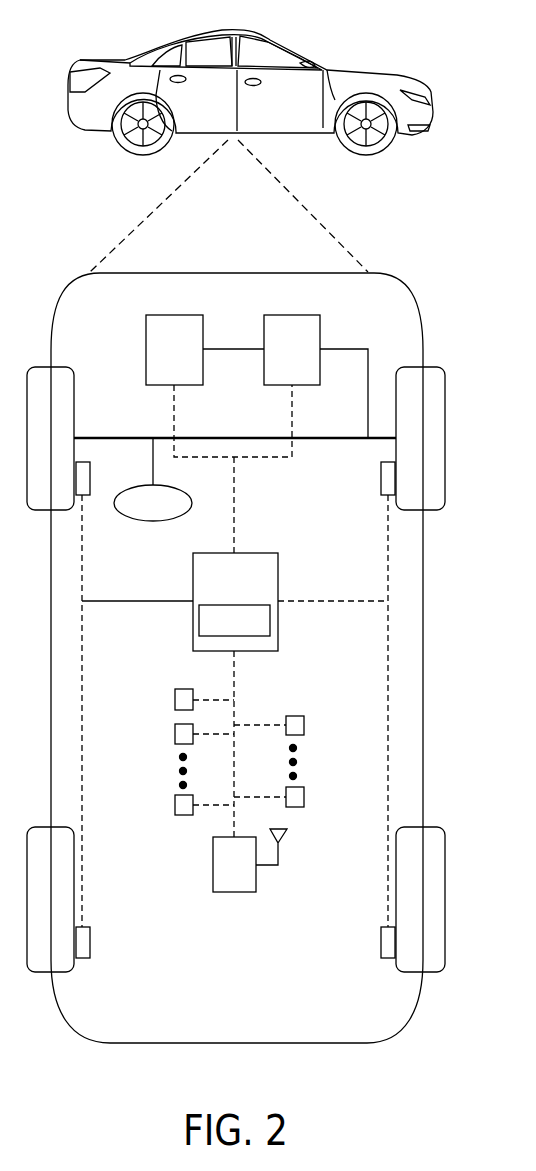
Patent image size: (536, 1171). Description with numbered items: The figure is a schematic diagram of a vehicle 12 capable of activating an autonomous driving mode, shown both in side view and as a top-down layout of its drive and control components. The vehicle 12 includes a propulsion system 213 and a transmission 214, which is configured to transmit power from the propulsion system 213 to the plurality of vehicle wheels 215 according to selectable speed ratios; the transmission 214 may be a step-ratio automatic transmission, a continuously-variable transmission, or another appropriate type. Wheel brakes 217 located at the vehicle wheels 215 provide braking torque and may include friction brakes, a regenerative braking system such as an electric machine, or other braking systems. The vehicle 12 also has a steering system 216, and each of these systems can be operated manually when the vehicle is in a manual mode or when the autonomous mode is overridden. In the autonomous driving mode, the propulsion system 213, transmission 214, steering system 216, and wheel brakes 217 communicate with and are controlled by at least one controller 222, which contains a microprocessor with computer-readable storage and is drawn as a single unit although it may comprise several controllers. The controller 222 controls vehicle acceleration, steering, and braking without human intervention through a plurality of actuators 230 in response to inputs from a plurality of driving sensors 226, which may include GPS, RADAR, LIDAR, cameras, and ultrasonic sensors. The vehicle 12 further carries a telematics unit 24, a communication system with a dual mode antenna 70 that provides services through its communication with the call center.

The vehicle 12 is at (68, 104).
The propulsion system 213 is at (146, 347).
The transmission 214 is at (320, 322).
The vehicle wheels 215 is at (74, 415).
The steering system 216 is at (153, 521).
The wheel brakes 217 is at (90, 480).
The controller 222 is at (278, 608).
The telematics unit 24 is at (255, 636).
The driving sensors 226 is at (175, 700).
The actuators 230 is at (304, 730).
The dual mode antenna 70 is at (283, 853).